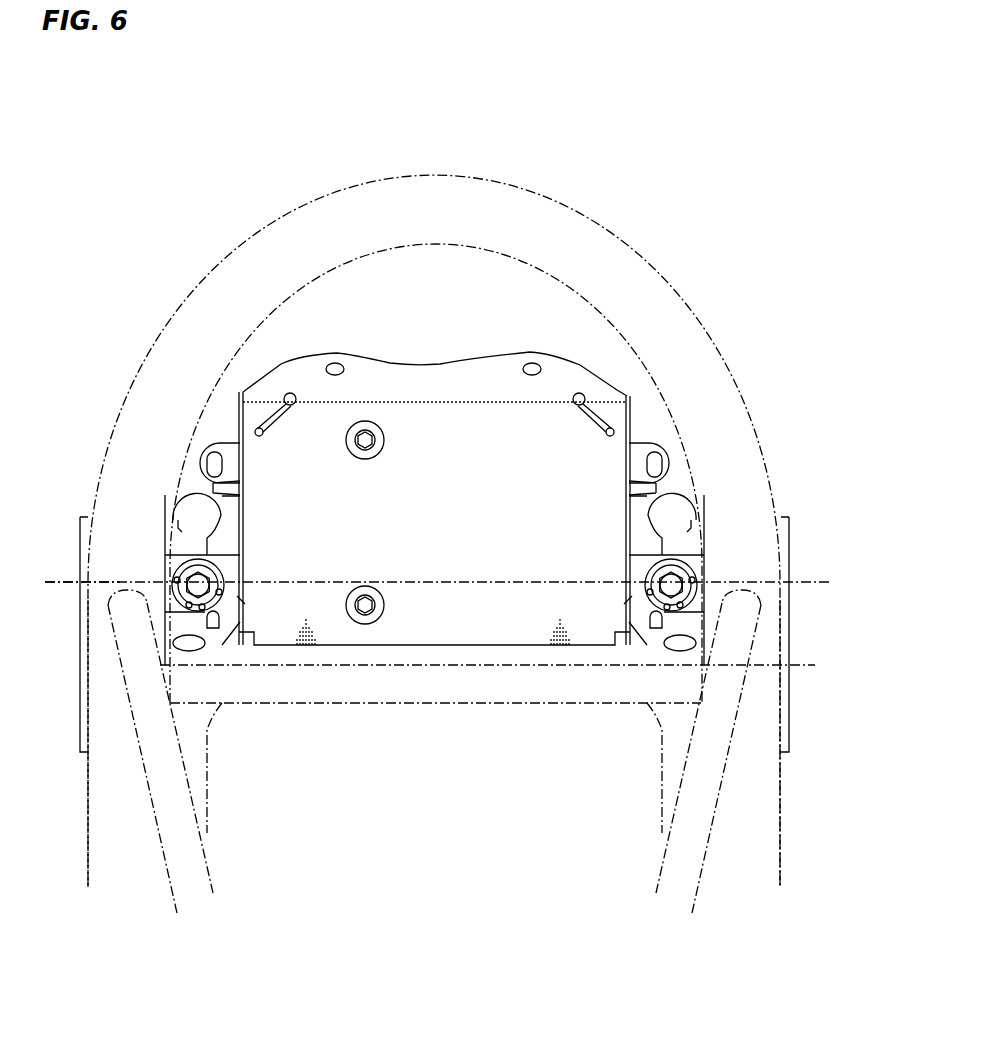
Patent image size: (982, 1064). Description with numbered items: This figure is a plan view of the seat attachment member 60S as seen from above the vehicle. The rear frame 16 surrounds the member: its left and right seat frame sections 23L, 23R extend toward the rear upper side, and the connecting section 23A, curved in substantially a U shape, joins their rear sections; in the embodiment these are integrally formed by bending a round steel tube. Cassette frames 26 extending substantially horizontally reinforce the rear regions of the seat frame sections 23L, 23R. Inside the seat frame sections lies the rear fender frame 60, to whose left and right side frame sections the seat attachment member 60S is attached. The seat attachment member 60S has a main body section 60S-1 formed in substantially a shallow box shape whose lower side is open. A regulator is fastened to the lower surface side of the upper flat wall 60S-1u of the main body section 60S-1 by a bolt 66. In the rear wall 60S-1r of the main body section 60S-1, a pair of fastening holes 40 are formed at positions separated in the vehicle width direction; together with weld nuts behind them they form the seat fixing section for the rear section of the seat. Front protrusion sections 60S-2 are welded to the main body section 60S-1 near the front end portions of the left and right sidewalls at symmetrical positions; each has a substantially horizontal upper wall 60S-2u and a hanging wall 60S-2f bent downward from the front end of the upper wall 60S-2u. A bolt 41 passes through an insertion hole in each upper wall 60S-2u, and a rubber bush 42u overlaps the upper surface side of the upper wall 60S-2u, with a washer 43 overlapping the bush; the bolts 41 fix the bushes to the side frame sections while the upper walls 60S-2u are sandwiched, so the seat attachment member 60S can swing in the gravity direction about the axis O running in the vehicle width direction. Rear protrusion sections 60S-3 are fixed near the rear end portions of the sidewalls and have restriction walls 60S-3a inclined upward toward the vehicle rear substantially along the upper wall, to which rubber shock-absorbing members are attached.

The rear frame 16 is at (652, 258).
The connecting section 23A is at (360, 190).
The right seat frame section 23R is at (115, 862).
The left seat frame section 23L is at (760, 851).
The cassette frame 26 is at (709, 765).
The fastening hole 40 is at (532, 362).
The bolt 41 is at (681, 574).
The upper rubber bush 42u is at (681, 610).
The washer 43 is at (689, 596).
The rear fender frame 60 is at (655, 786).
The seat attachment member 60S is at (557, 337).
The main body section 60S-1 is at (266, 372).
The rear wall 60S-1r is at (390, 372).
The upper flat wall 60S-1u is at (470, 437).
The front protrusion section 60S-2 is at (162, 563).
The upper wall 60S-2u is at (647, 533).
The hanging wall 60S-2f is at (677, 630).
The rear protrusion section 60S-3 is at (668, 442).
The restriction wall 60S-3a is at (206, 442).
The bolt 66 is at (378, 612).
The axis O is at (60, 580).